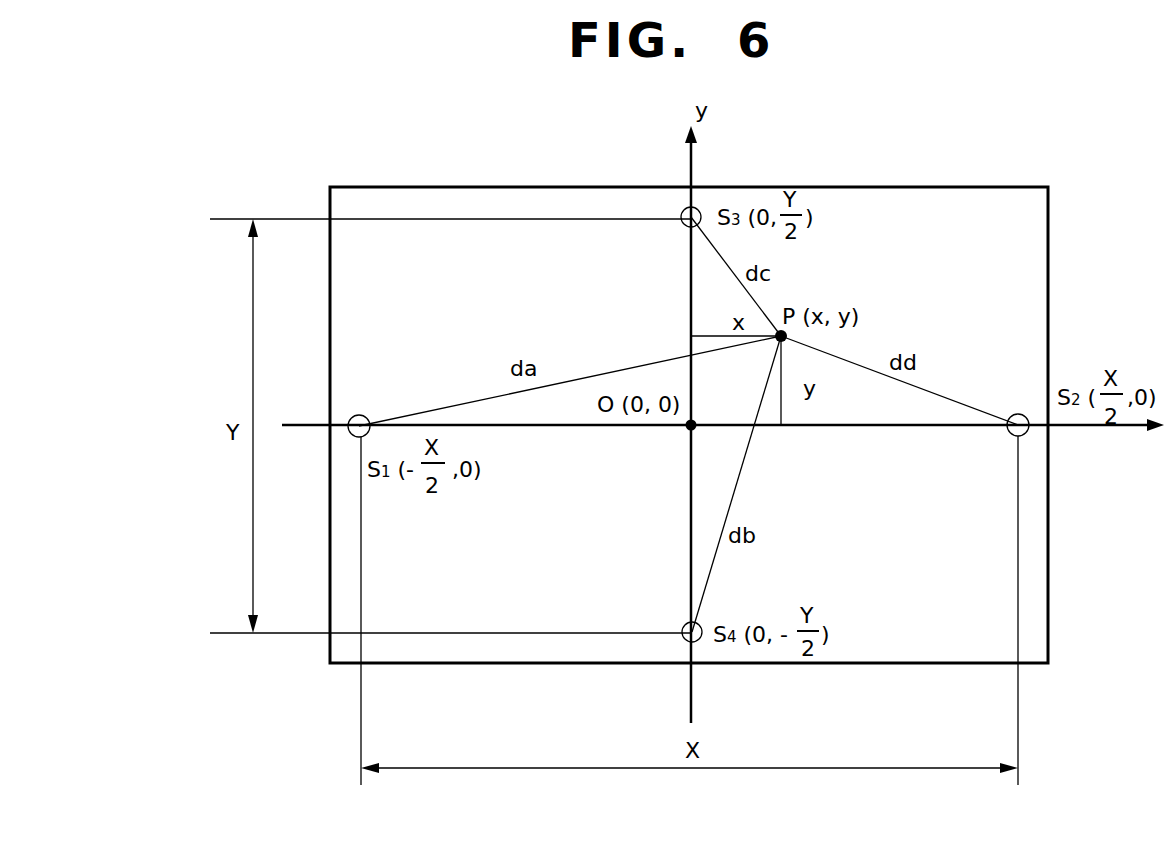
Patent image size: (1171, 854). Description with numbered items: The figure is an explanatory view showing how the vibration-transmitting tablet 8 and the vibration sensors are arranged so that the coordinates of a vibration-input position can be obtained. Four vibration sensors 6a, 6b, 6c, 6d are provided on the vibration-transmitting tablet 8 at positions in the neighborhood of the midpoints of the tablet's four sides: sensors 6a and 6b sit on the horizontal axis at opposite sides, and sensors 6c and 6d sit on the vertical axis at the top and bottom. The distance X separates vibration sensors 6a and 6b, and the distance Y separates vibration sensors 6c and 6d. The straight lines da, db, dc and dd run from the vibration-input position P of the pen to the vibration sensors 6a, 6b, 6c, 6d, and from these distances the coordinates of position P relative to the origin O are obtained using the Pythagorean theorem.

The vibration-transmitting tablet 8 is at (458, 200).
The vibration sensor 6a is at (350, 437).
The vibration sensor 6b is at (1027, 433).
The vibration sensor 6c is at (683, 209).
The vibration sensor 6d is at (684, 640).